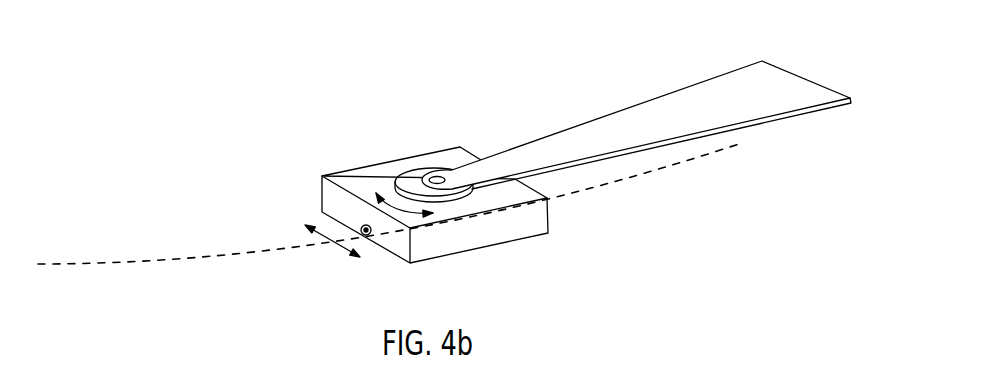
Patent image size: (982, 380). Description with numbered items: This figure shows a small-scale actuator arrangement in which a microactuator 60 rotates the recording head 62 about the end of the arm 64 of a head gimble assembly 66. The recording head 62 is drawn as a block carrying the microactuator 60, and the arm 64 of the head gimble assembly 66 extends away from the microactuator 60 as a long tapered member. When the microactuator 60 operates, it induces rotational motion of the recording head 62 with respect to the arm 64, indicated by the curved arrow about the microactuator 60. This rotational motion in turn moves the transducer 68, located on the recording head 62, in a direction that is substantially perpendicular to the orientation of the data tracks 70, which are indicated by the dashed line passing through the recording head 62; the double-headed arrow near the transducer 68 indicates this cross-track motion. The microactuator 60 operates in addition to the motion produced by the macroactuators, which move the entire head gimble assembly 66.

The microactuator 60 is at (410, 181).
The recording head 62 is at (513, 230).
The arm 64 is at (725, 127).
The head gimble assembly 66 is at (652, 73).
The transducer 68 is at (368, 238).
The data tracks 70 is at (160, 262).